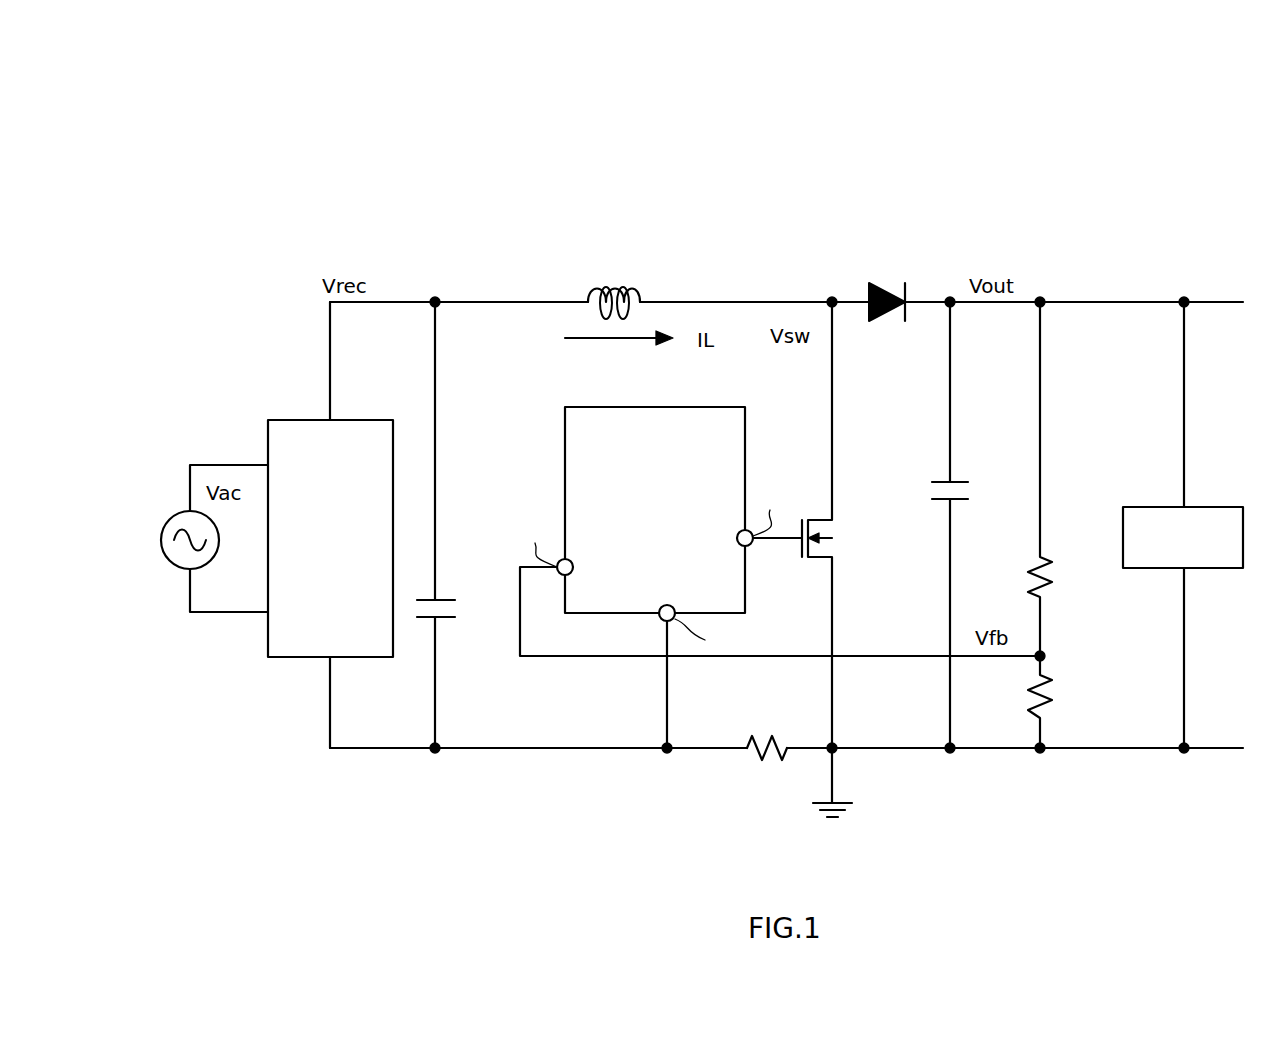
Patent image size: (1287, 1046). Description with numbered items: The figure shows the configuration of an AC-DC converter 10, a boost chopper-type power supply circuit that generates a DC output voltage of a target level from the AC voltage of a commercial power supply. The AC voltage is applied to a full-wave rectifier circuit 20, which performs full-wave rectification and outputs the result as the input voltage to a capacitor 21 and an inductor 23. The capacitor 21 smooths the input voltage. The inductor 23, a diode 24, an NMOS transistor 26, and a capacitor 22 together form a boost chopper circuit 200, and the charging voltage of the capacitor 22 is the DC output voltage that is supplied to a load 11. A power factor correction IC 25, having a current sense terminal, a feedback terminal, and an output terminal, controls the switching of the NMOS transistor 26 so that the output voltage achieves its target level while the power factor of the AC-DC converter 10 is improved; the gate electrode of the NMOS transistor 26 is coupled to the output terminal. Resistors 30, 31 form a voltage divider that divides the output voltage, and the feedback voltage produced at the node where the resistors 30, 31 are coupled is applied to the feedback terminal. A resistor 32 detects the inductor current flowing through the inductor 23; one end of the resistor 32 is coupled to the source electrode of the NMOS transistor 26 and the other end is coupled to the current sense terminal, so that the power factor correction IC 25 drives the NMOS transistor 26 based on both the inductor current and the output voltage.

The AC-DC converter 10 is at (1102, 137).
The boost chopper circuit 200 is at (954, 258).
The load 11 is at (1213, 507).
The full-wave rectifier circuit 20 is at (275, 418).
The capacitor 21 is at (428, 620).
The capacitor 22 is at (962, 482).
The inductor 23 is at (637, 290).
The diode 24 is at (893, 285).
The power factor correction IC 25 is at (583, 407).
The NMOS transistor 26 is at (835, 555).
The resistor 30 is at (1047, 567).
The resistor 31 is at (1048, 688).
The resistor 32 is at (775, 760).